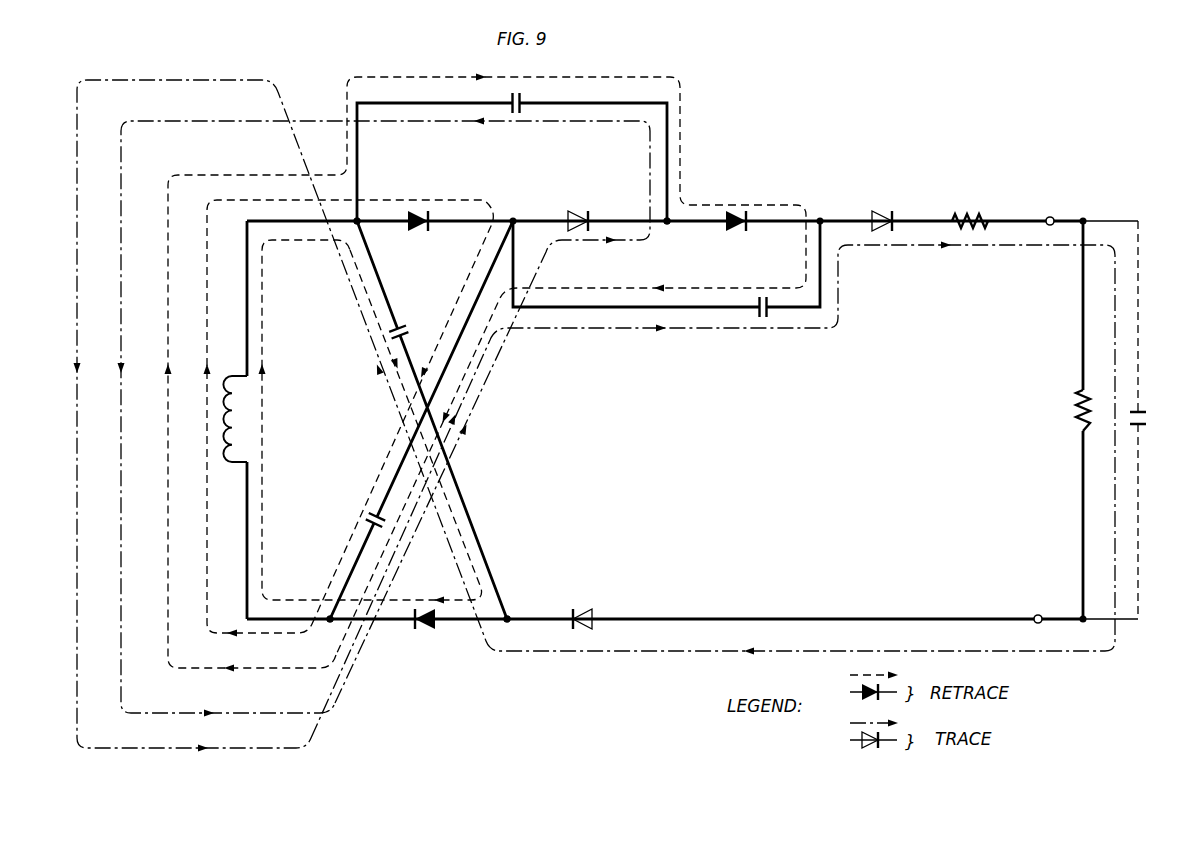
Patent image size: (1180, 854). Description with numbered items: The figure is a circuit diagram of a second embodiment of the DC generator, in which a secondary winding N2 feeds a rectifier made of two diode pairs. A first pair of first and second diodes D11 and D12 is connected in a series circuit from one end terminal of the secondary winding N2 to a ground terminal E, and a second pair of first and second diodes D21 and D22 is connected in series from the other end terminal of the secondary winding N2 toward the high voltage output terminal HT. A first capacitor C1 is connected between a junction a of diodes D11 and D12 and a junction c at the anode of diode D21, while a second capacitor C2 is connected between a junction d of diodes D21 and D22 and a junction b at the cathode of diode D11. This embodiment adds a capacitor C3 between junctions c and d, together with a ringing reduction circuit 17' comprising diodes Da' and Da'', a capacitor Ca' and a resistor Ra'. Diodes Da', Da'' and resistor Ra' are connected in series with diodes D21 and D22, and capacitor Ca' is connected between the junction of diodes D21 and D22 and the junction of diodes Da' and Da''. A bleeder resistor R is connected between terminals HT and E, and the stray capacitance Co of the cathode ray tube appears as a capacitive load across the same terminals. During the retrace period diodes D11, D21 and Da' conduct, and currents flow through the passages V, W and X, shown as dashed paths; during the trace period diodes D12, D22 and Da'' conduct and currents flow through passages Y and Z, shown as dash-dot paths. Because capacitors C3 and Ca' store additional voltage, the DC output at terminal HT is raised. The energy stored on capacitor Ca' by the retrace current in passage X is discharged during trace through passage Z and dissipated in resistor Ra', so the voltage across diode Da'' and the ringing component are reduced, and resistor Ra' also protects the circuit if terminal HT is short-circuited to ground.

The first capacitor C1 is at (370, 514).
The second capacitor C2 is at (404, 325).
The additional capacitor C3 is at (516, 113).
The capacitor Ca' is at (666, 292).
The stray capacitance Co is at (1140, 417).
The first diode D11 is at (425, 632).
The second diode D12 is at (579, 632).
The first diode D21 is at (418, 212).
The second diode D22 is at (577, 211).
The diode Da' is at (749, 200).
The diode Da'' is at (887, 200).
The resistor Ra' is at (972, 201).
The bleeder resistor R is at (1077, 410).
The high voltage output terminal HT is at (1054, 218).
The ground terminal E is at (1038, 614).
The secondary winding N2 is at (234, 464).
The ringing reduction circuit 17' is at (893, 291).
The junction a is at (510, 617).
The junction b is at (329, 617).
The junction c is at (359, 219).
The junction d is at (670, 219).
The passage V is at (475, 571).
The passage W is at (352, 537).
The passage X is at (740, 288).
The passage Y is at (314, 709).
The passage Z is at (824, 329).